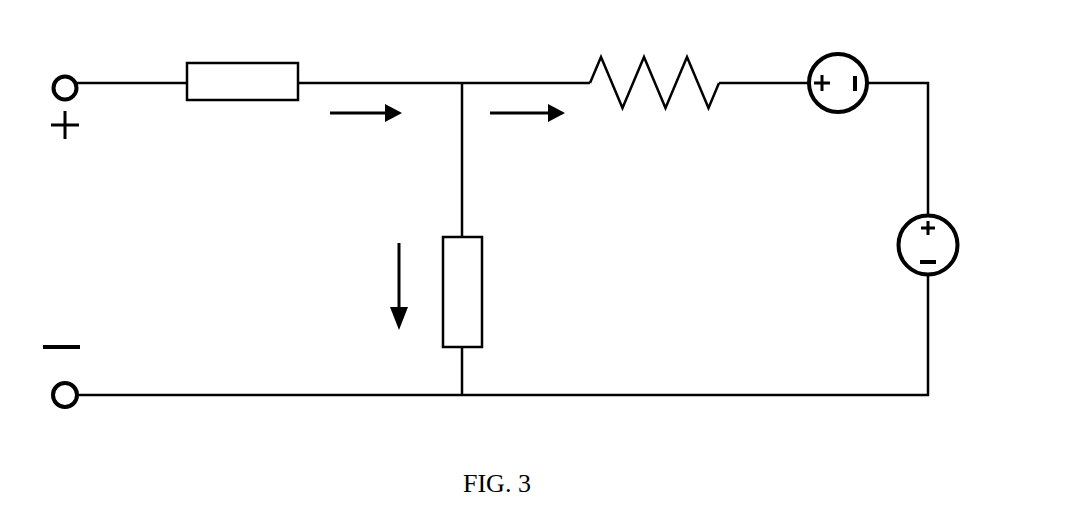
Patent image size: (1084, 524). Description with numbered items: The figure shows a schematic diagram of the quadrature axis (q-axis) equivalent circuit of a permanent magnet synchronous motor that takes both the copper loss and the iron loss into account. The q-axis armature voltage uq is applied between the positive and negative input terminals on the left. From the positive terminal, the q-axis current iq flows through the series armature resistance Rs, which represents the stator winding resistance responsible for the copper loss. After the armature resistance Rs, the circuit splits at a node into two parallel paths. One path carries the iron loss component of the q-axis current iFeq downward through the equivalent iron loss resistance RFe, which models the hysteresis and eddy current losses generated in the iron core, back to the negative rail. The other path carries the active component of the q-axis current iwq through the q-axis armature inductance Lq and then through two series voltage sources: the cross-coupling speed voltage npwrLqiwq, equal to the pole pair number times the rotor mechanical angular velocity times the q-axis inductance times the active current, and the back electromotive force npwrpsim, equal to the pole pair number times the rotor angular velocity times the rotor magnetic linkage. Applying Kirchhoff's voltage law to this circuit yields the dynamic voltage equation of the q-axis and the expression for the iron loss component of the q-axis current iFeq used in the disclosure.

The q-axis armature voltage uq is at (74, 238).
The armature resistance Rs is at (242, 59).
The q-axis current iq is at (366, 138).
The active component of the q-axis current iwq is at (527, 138).
The iron loss component of the q-axis current iFeq is at (370, 286).
The equivalent iron loss resistance RFe is at (492, 292).
The q-axis armature inductance Lq is at (654, 60).
The speed voltage term n_p ω_r L_q i_wq npwrLqiwq is at (810, 124).
The back-EMF term n_p ω_r ψ_m npwrpsim is at (851, 253).